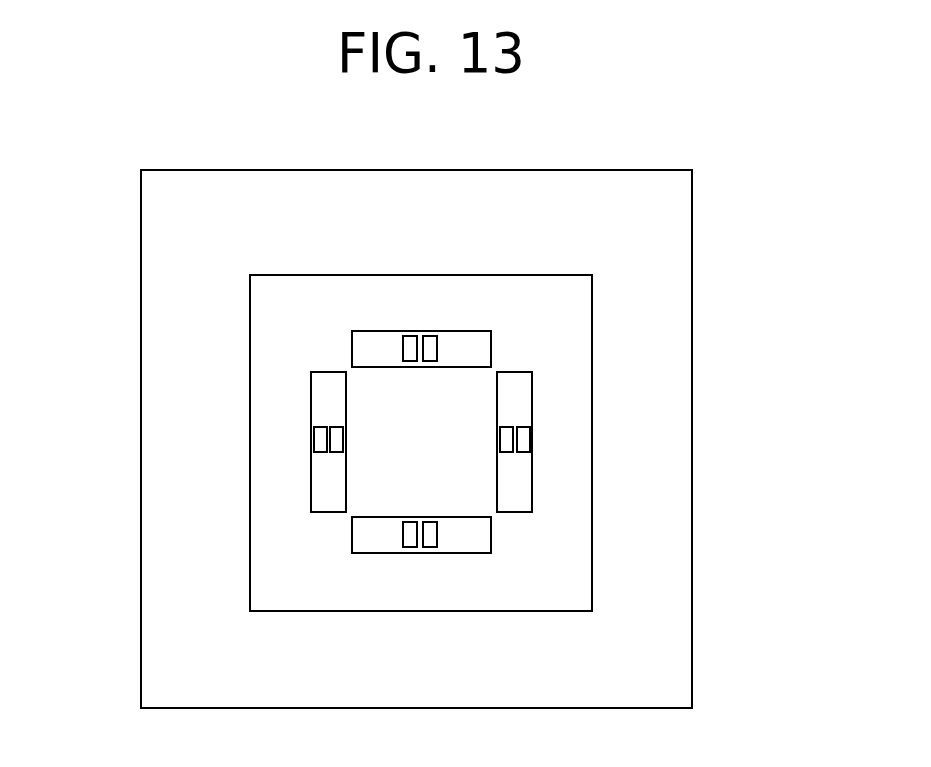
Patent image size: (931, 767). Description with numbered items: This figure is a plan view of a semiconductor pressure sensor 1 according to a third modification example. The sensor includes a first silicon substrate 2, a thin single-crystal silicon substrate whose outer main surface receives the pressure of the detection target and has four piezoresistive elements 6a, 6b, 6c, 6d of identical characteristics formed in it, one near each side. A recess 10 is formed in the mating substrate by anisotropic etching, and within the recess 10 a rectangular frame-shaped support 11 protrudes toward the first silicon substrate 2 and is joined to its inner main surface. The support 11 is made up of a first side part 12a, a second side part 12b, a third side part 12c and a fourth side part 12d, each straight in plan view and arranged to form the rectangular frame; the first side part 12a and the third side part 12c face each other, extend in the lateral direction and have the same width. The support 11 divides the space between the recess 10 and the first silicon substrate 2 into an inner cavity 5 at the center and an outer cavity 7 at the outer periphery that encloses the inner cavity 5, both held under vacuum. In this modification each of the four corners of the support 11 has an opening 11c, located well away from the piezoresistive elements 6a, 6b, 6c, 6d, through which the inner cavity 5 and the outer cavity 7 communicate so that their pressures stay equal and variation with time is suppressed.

The semiconductor pressure sensor 1 is at (647, 158).
The first silicon substrate 2 is at (660, 632).
The inner cavity 5 is at (458, 403).
The piezoresistive element 6a is at (421, 335).
The piezoresistive element 6b is at (327, 453).
The piezoresistive element 6c is at (418, 553).
The piezoresistive element 6d is at (510, 452).
The outer cavity 7 is at (564, 312).
The recess 10 is at (558, 558).
The support 11 is at (518, 497).
The opening 11c is at (343, 363).
The first side part 12a is at (375, 352).
The second side part 12b is at (326, 493).
The third side part 12c is at (462, 553).
The fourth side part 12d is at (523, 411).